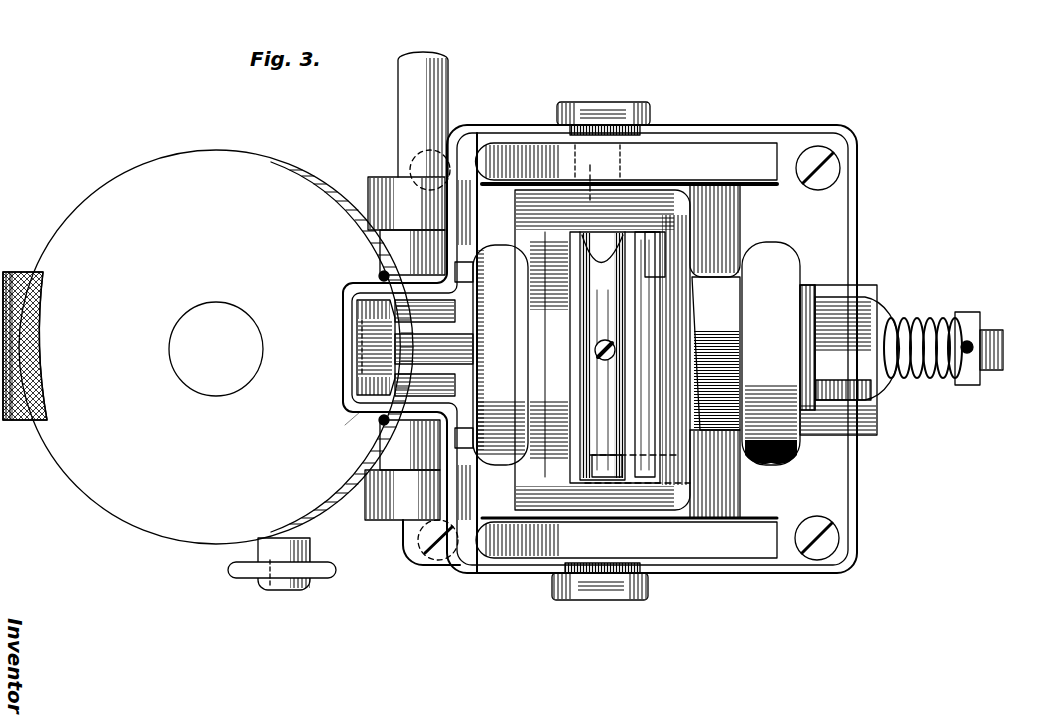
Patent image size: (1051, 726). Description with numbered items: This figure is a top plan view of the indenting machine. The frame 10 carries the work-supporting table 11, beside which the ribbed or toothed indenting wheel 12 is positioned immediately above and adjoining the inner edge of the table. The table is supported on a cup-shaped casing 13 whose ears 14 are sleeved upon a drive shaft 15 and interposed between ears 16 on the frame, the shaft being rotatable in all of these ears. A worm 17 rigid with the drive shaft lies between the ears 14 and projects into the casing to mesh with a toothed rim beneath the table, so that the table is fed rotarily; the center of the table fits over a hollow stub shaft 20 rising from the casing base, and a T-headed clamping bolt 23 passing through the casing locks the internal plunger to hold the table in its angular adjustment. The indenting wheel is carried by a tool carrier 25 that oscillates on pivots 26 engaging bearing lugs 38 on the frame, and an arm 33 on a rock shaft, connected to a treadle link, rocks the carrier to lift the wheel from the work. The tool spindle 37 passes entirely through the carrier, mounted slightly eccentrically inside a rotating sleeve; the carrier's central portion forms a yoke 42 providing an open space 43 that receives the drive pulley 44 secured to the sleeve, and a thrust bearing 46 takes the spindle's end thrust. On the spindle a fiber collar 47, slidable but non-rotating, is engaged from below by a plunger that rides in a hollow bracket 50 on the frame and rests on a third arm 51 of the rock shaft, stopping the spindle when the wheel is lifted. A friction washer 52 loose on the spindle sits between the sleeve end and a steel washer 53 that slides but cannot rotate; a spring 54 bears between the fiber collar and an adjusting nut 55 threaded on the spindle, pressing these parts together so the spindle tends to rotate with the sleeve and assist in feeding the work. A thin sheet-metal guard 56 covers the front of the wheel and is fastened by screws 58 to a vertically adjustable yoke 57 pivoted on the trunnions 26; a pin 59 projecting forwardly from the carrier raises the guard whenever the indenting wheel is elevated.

The frame 10 is at (600, 349).
The table 11 is at (208, 347).
The indenting wheel 12 is at (357, 346).
The cup-shaped casing 13 is at (345, 520).
The ears 14 is at (378, 247).
The drive shaft 15 is at (410, 110).
The ears 16 is at (378, 192).
The worm 17 is at (452, 312).
The stub shaft 20 is at (216, 349).
The T-headed clamping bolt 23 is at (312, 548).
The tool carrier 25 is at (636, 353).
The pivots 26 is at (598, 110).
The arm 33 is at (648, 482).
The tool spindle 37 is at (450, 348).
The bearing lugs 38 is at (510, 160).
The yoke 42 is at (673, 240).
The open space 43 is at (650, 250).
The drive pulley 44 is at (602, 356).
The thrust bearing 46 is at (645, 325).
The fiber collar 47 is at (876, 398).
The hollow bracket 50 is at (872, 310).
The third arm 51 is at (867, 436).
The friction washer 52 is at (806, 285).
The steel washer 53 is at (814, 300).
The spring 54 is at (925, 378).
The adjusting nut 55 is at (972, 322).
The guard 56 is at (343, 380).
The yoke 57 is at (357, 422).
The screws 58 is at (380, 275).
The pin 59 is at (473, 274).